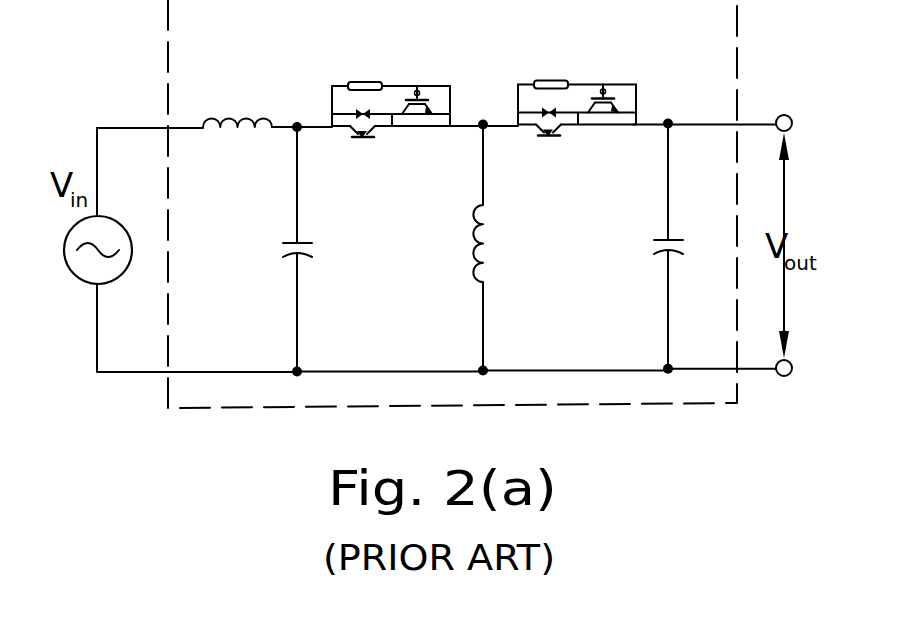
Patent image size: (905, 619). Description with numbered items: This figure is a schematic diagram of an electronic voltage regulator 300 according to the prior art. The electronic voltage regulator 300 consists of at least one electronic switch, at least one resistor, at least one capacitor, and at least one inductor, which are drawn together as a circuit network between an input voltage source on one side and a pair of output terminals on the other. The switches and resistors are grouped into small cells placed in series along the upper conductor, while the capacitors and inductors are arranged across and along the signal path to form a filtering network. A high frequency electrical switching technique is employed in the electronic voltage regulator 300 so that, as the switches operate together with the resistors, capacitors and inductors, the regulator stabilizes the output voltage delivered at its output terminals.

The electronic voltage regulator 300 is at (712, 66).